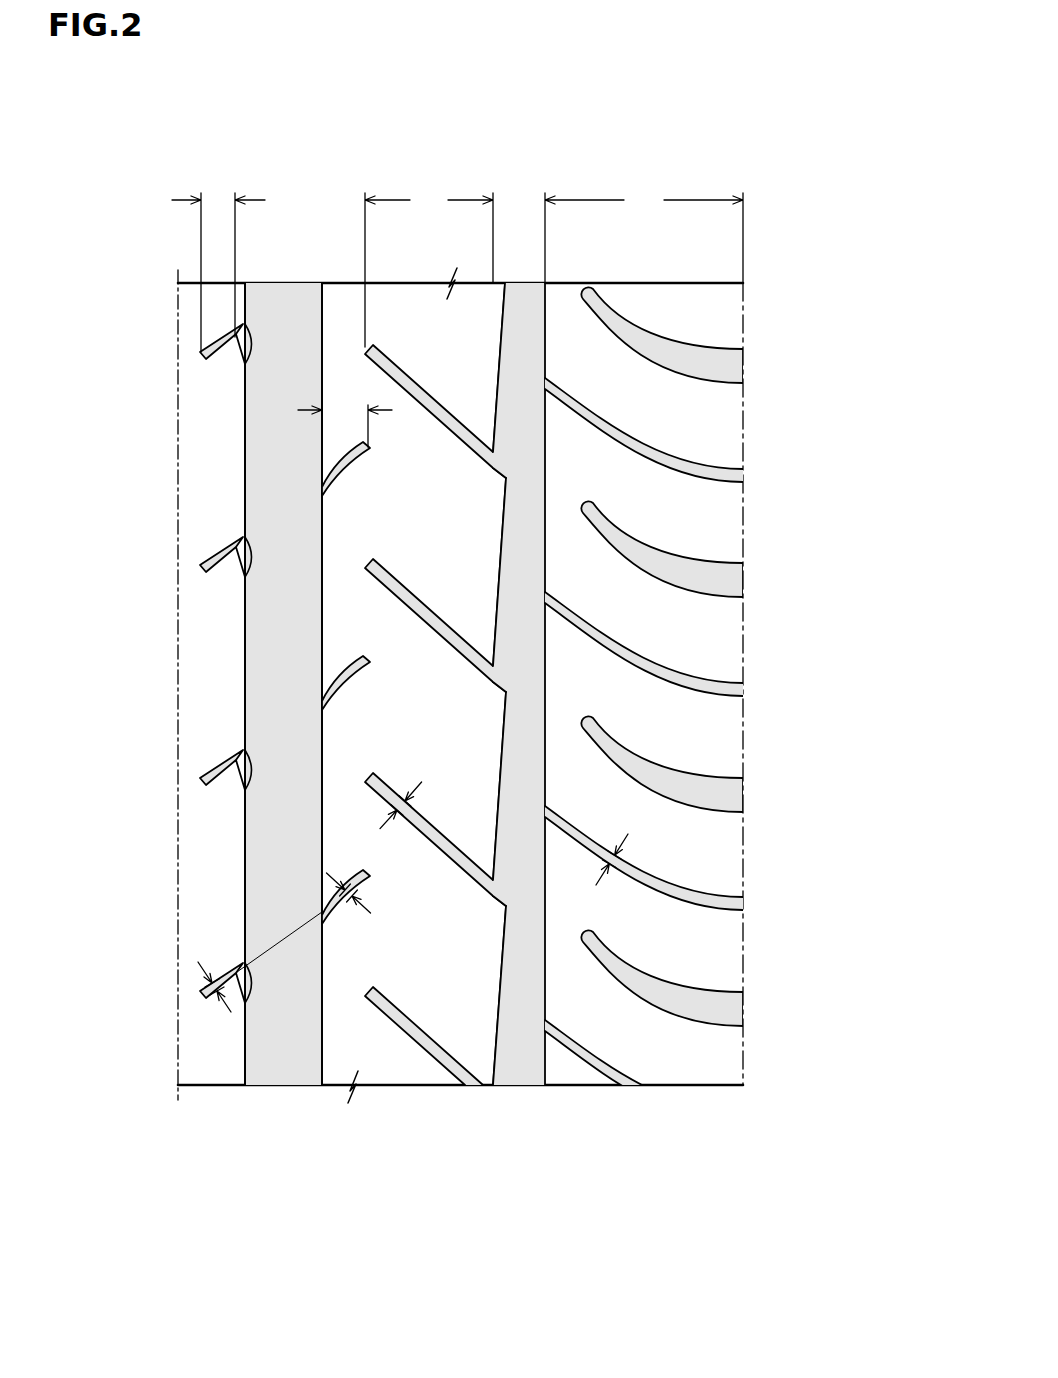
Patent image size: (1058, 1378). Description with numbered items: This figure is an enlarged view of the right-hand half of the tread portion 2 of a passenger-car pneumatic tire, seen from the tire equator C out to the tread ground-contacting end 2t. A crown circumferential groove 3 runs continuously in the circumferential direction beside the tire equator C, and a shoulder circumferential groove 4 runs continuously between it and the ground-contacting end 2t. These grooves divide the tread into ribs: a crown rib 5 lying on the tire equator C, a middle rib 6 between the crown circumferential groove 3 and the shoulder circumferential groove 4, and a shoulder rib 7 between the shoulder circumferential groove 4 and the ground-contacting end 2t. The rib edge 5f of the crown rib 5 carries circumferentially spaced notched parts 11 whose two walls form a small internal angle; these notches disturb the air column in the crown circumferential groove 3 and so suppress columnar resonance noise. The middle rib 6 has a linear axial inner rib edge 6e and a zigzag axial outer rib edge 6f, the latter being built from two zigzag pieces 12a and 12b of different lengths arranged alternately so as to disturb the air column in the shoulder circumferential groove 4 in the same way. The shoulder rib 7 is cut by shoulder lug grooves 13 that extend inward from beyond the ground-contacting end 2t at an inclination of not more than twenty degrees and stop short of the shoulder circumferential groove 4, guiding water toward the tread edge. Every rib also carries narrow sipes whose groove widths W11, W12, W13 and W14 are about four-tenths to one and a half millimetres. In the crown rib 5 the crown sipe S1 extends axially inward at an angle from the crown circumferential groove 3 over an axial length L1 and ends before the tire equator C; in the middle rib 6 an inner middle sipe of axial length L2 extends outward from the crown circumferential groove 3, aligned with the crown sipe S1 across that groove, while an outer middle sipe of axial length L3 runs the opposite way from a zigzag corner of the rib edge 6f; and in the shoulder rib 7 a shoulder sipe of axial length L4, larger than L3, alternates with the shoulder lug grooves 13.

The tread portion 2 is at (733, 166).
The tread ground-contacting end 2t is at (747, 1073).
The tire equator C is at (178, 670).
The crown circumferential groove 3 is at (284, 1076).
The shoulder circumferential groove 4 is at (673, 735).
The crown rib 5 is at (216, 1076).
The rib edge 5f is at (248, 470).
The middle rib 6 is at (390, 1076).
The axial inner rib edge 6e is at (322, 325).
The axial outer rib edge 6f is at (494, 442).
The shoulder rib 7 is at (644, 1076).
The notched part 11 is at (248, 352).
The zigzag piece 12a is at (502, 775).
The zigzag piece 12b is at (497, 680).
The shoulder lug groove 13 is at (718, 355).
The crown sipe S1 is at (222, 336).
The groove width W11 is at (215, 990).
The groove width W12 is at (352, 890).
The groove width W13 is at (408, 812).
The groove width W14 is at (613, 857).
The axial length L1 is at (218, 264).
The axial length L2 is at (345, 447).
The axial length L3 is at (429, 268).
The axial length L4 is at (644, 236).